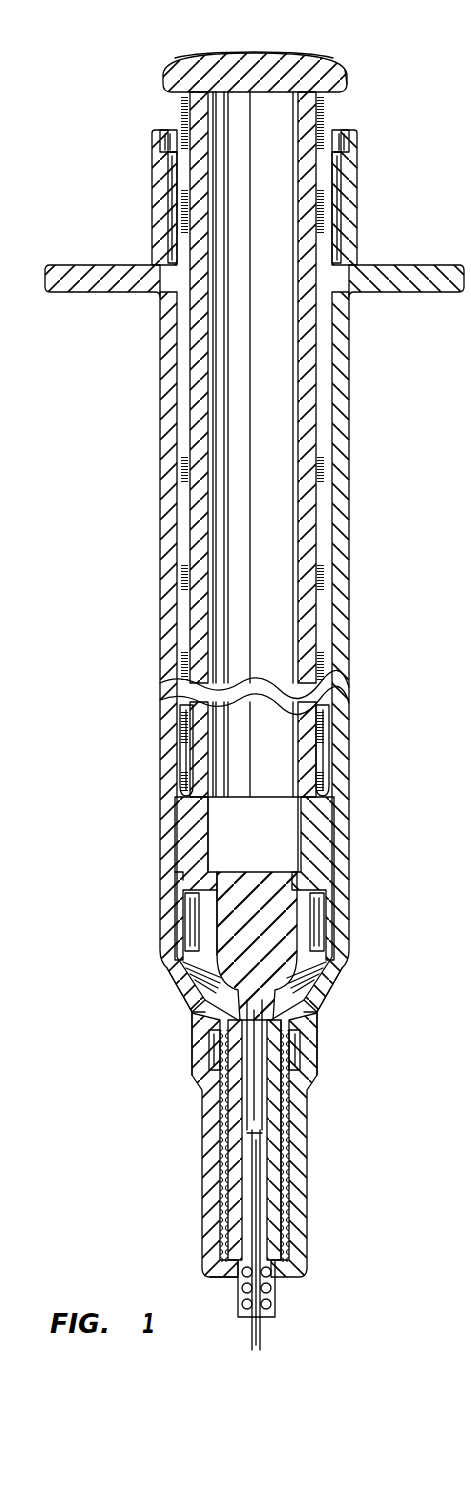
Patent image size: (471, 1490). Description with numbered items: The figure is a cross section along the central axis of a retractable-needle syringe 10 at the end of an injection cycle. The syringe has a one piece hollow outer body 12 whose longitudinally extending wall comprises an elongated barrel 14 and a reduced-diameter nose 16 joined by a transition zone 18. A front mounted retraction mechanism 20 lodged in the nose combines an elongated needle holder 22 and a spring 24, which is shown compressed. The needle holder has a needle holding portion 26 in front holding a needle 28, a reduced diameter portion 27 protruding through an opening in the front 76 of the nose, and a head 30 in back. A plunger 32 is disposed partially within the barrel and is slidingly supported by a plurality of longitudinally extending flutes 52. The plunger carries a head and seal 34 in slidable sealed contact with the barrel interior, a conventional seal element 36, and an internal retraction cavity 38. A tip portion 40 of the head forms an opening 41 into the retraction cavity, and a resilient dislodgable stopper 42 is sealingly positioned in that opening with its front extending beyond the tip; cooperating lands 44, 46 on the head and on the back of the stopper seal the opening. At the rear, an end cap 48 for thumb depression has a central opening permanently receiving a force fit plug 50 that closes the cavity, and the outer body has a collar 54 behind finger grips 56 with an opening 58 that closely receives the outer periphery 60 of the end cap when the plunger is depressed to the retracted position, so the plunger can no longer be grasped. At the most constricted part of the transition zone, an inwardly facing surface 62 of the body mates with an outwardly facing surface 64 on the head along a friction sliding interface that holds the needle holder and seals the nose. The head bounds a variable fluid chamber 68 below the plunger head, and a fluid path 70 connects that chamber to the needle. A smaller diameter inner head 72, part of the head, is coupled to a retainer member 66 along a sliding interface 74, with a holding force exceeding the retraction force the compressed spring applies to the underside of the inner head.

The syringe 10 is at (135, 47).
The hollow outer body 12 is at (134, 427).
The barrel 14 is at (160, 527).
The nose 16 is at (205, 1125).
The transition zone 18 is at (170, 982).
The retraction mechanism 20 is at (296, 1047).
The needle holder 22 is at (306, 1137).
The spring 24 is at (215, 1193).
The needle holding portion 26 is at (276, 1222).
The reduced diameter portion 27 is at (276, 1297).
The needle 28 is at (263, 1340).
The head 30 is at (188, 1020).
The plunger 32 is at (320, 393).
The head and seal 34 is at (353, 835).
The seal element 36 is at (178, 847).
The retraction cavity 38 is at (280, 756).
The tip portion 40 is at (330, 952).
The opening 41 is at (217, 930).
The resilient dislodgable stopper 42 is at (245, 870).
The land 44 is at (175, 866).
The land 46 is at (187, 900).
The end cap 48 is at (324, 58).
The force fit plug 50 is at (238, 47).
The flutes 52 is at (173, 212).
The collar 54 is at (358, 206).
The finger grips 56 is at (117, 295).
The opening 58 is at (172, 130).
The outer periphery 60 is at (349, 80).
The inwardly facing surface 62 is at (298, 1020).
The outwardly facing surface 64 is at (197, 1012).
The retainer member 66 is at (210, 1045).
The variable fluid chamber 68 is at (316, 927).
The fluid path 70 is at (268, 1113).
The inner head 72 is at (183, 963).
The sliding interface 74 is at (330, 990).
The front 76 is at (238, 1283).